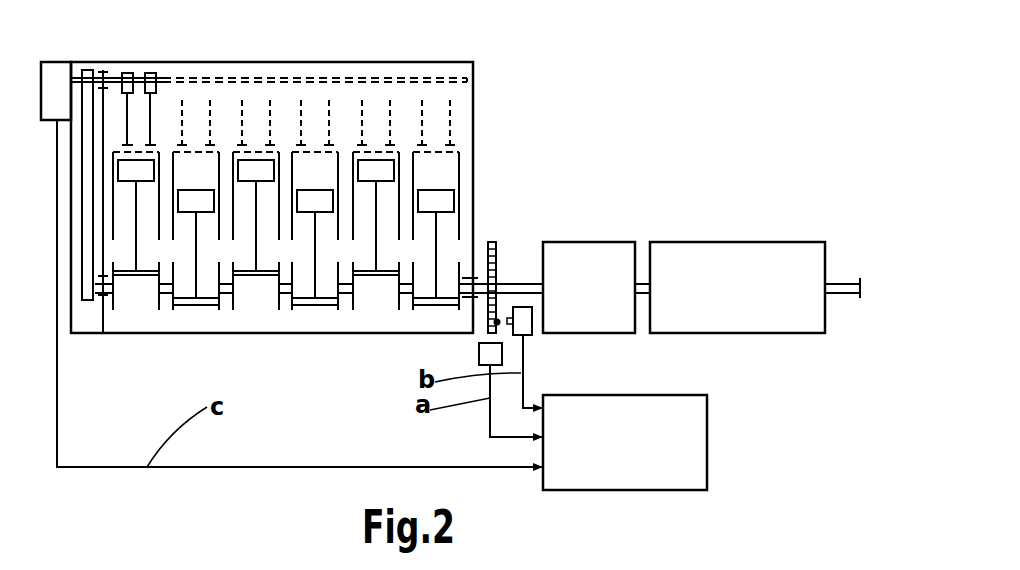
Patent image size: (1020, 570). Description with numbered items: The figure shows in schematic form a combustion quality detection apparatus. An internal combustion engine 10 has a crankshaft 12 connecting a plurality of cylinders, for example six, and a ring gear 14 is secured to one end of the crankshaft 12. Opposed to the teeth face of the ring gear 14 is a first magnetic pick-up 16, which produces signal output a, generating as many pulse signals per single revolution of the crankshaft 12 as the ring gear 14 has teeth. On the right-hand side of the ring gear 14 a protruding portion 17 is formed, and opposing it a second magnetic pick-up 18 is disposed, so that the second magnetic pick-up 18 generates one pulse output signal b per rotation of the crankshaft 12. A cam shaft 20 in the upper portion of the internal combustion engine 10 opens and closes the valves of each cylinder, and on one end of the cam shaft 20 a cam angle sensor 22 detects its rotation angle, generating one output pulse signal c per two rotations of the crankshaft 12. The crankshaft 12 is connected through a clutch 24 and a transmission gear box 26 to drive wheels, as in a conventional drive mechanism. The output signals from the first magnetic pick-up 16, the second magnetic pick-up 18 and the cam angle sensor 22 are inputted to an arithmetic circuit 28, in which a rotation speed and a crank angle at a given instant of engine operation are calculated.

The internal combustion engine 10 is at (474, 120).
The crankshaft 12 is at (507, 282).
The ring gear 14 is at (492, 241).
The first magnetic pick-up 16 is at (479, 357).
The protruding portion 17 is at (500, 325).
The second magnetic pick-up 18 is at (512, 320).
The cam shaft 20 is at (162, 80).
The cam angle sensor 22 is at (60, 64).
The clutch 24 is at (586, 246).
The transmission gear box 26 is at (717, 246).
The arithmetic circuit 28 is at (707, 450).